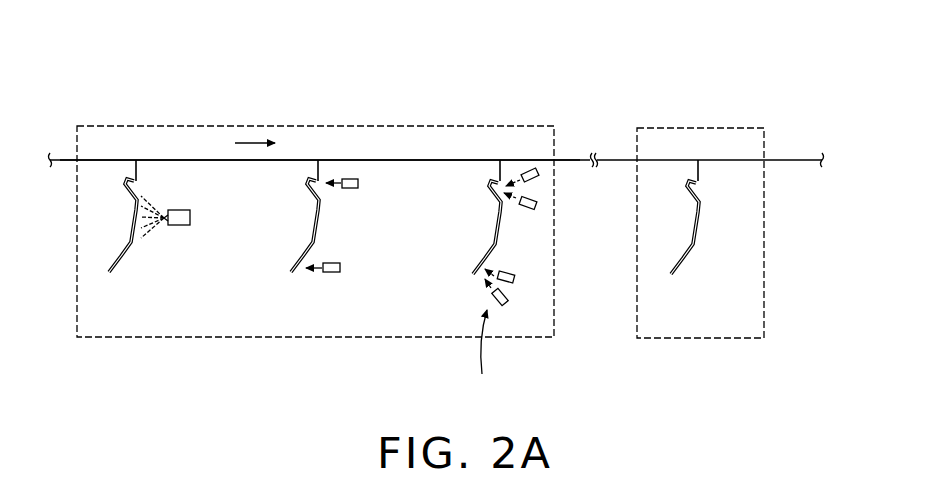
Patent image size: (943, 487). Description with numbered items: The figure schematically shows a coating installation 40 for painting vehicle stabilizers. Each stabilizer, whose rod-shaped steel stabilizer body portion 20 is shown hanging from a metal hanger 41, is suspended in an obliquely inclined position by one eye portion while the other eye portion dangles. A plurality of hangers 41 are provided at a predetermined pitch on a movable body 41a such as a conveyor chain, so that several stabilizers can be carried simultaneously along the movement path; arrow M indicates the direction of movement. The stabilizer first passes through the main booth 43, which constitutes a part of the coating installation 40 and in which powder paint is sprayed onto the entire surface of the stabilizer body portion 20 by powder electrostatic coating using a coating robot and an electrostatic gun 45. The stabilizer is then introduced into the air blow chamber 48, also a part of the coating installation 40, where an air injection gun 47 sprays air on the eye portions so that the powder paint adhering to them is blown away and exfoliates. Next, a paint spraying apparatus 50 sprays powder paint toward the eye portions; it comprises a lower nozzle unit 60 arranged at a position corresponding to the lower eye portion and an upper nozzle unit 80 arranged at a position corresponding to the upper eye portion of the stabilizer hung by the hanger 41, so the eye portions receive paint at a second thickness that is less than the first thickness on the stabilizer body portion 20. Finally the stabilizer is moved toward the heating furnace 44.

The coating installation 40 is at (522, 76).
The hanger 41 is at (140, 167).
The movable body 41a is at (413, 157).
The main booth 43 is at (153, 125).
The heating furnace 44 is at (705, 127).
The electrostatic gun 45 is at (192, 218).
The air injection gun 47 is at (360, 185).
The air blow chamber 48 is at (313, 309).
The paint spraying apparatus 50 is at (485, 355).
The lower nozzle unit 60 is at (521, 262).
The upper nozzle unit 80 is at (541, 189).
The stabilizer body portion 20 is at (133, 243).
The arrow M is at (252, 140).